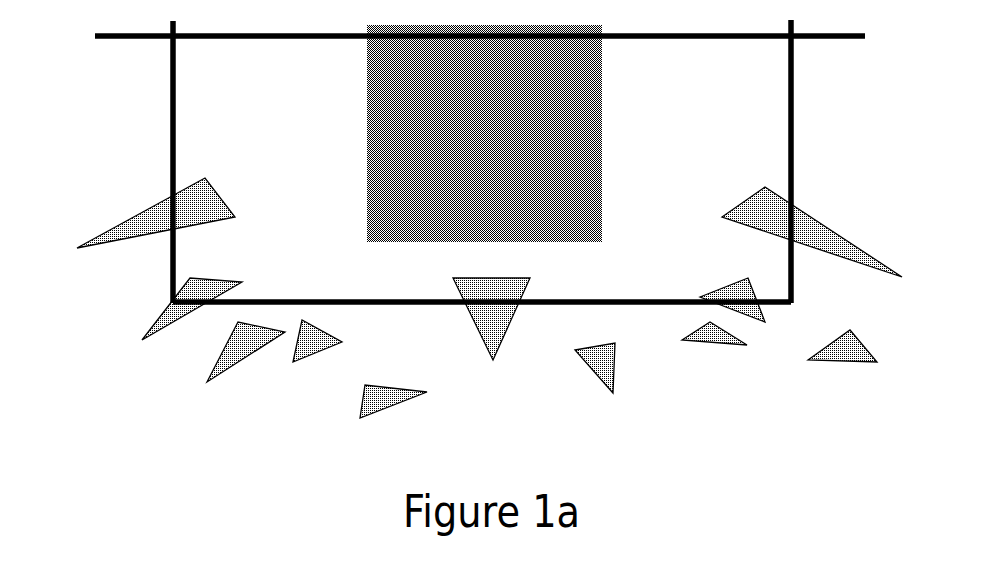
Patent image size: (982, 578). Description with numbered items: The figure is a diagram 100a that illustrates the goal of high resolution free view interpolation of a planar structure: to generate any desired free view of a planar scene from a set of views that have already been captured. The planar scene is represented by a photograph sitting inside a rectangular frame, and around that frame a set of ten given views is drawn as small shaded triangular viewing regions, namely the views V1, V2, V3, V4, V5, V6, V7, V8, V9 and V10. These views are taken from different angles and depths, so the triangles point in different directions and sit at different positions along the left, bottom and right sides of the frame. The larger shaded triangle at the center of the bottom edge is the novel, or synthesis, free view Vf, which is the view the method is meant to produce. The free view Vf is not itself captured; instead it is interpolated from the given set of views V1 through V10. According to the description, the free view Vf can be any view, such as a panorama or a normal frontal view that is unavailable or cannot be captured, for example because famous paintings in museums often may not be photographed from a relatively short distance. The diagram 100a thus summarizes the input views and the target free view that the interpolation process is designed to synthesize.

The diagram 100a is at (100, 143).
The view V1 is at (156, 213).
The view V2 is at (181, 307).
The view V3 is at (225, 360).
The view V4 is at (305, 361).
The view V5 is at (376, 409).
The free view Vf is at (497, 325).
The view V6 is at (618, 378).
The view V7 is at (714, 356).
The view V8 is at (752, 322).
The view V9 is at (842, 371).
The view V10 is at (812, 249).